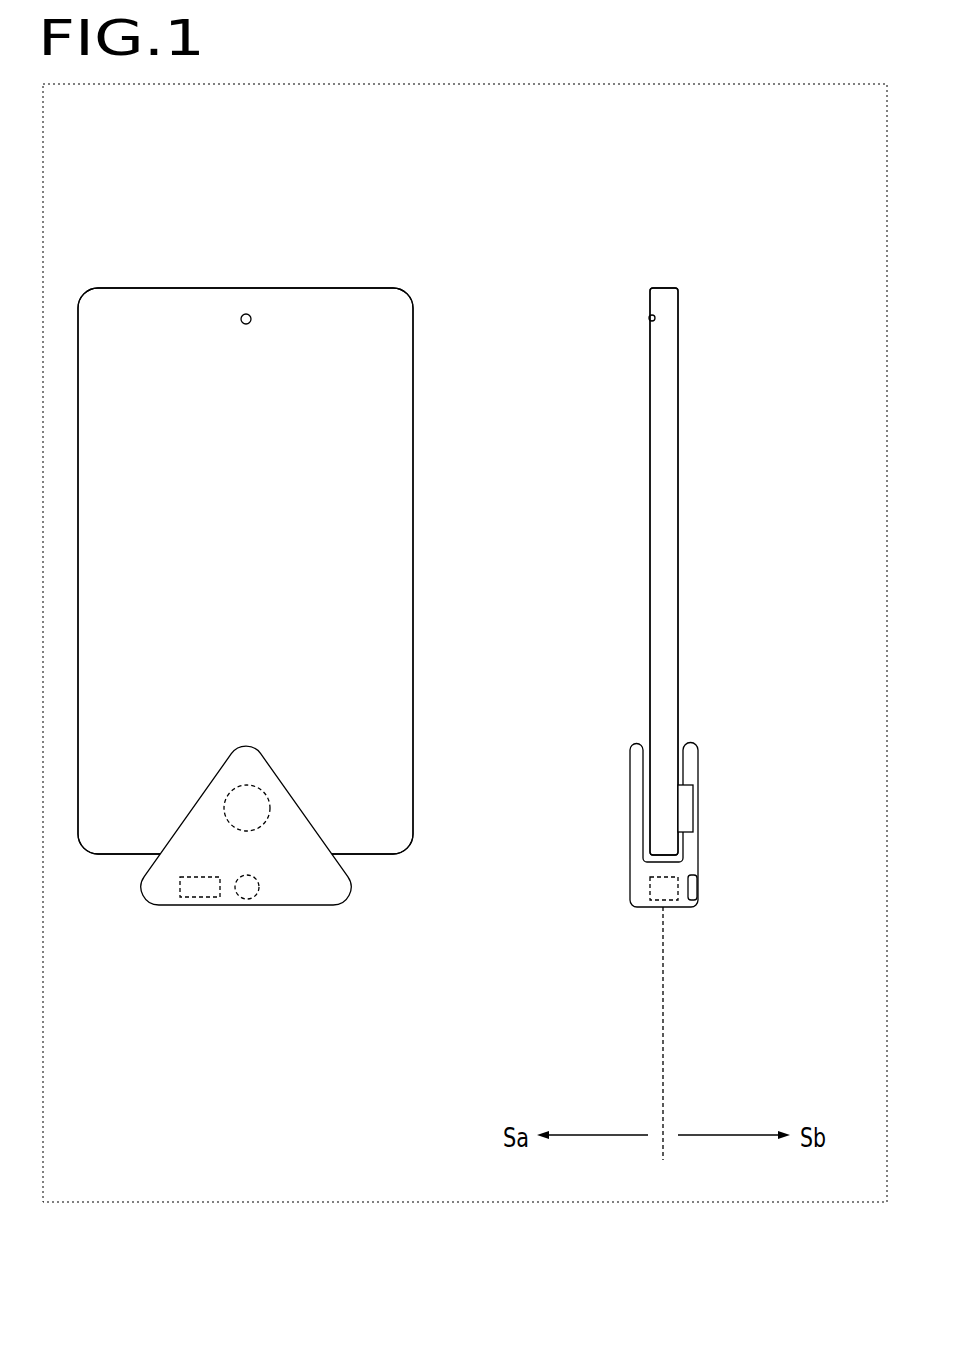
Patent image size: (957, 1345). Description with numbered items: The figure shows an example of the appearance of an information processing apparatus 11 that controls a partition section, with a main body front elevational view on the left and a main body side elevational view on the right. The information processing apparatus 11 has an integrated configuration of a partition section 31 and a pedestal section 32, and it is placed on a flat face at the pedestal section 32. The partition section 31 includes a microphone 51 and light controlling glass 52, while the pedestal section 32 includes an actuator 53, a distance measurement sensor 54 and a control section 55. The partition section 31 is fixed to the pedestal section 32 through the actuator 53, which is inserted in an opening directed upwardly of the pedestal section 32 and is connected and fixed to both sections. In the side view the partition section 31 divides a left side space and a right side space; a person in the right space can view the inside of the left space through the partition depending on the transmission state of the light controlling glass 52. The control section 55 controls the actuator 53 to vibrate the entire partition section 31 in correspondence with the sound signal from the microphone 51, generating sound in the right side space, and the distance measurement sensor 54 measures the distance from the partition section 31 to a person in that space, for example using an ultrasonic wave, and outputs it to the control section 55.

The information processing apparatus 11 is at (482, 205).
The partition section 31 is at (176, 288).
The pedestal section 32 is at (298, 905).
The microphone 51 is at (248, 314).
The light controlling glass 52 is at (356, 565).
The actuator 53 is at (270, 805).
The distance measurement sensor 54 is at (245, 905).
The control section 55 is at (183, 905).